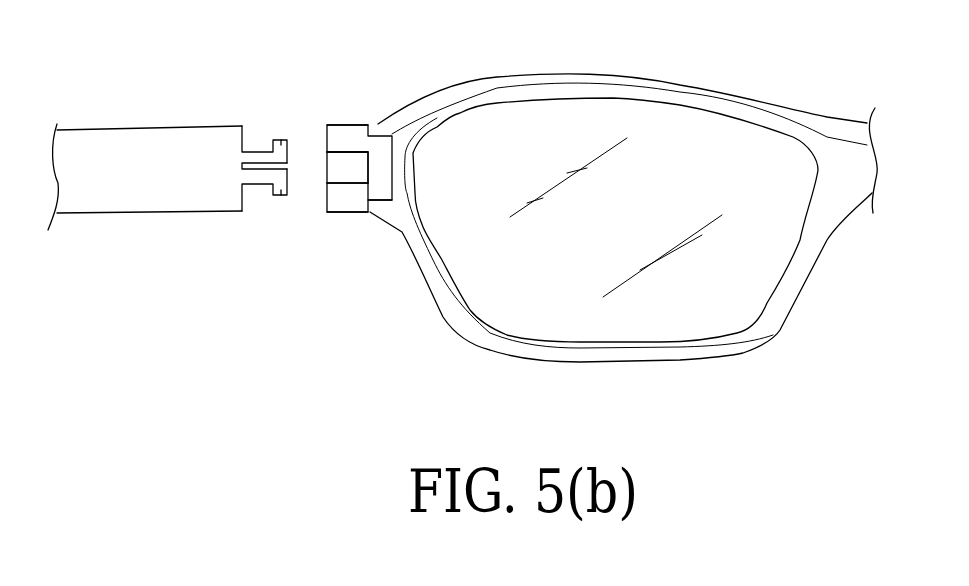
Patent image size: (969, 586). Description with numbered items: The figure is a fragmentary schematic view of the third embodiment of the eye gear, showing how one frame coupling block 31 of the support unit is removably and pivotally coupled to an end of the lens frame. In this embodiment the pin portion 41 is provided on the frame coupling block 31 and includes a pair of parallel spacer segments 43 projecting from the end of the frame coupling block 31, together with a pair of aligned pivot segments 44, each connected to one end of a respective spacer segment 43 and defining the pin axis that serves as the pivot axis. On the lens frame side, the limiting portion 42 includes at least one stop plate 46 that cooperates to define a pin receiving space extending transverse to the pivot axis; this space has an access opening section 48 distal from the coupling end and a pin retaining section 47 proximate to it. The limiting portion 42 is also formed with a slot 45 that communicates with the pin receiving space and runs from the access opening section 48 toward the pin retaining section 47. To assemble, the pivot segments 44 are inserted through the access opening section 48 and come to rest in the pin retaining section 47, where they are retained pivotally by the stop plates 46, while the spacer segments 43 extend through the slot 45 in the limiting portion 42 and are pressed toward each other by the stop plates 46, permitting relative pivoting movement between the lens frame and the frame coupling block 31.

The frame coupling block 31 is at (140, 137).
The pin portion 41 is at (250, 223).
The limiting portion 42 is at (355, 118).
The spacer segment 43 is at (257, 151).
The pivot segment 44 is at (280, 140).
The slot 45 is at (340, 168).
The stop plate 46 is at (335, 135).
The pin retaining section 47 is at (348, 160).
The access opening section 48 is at (381, 165).